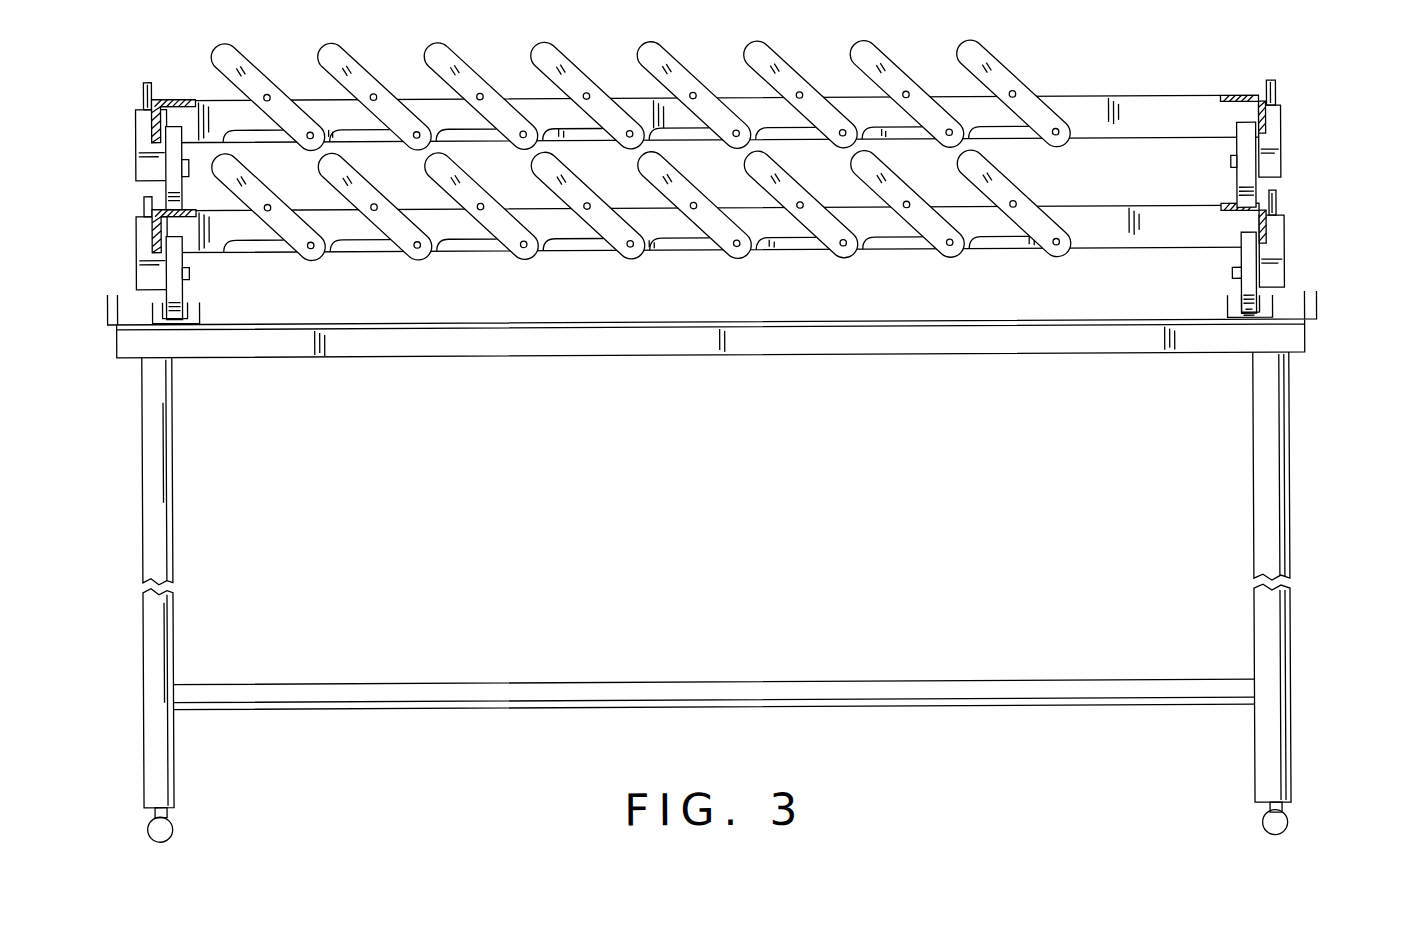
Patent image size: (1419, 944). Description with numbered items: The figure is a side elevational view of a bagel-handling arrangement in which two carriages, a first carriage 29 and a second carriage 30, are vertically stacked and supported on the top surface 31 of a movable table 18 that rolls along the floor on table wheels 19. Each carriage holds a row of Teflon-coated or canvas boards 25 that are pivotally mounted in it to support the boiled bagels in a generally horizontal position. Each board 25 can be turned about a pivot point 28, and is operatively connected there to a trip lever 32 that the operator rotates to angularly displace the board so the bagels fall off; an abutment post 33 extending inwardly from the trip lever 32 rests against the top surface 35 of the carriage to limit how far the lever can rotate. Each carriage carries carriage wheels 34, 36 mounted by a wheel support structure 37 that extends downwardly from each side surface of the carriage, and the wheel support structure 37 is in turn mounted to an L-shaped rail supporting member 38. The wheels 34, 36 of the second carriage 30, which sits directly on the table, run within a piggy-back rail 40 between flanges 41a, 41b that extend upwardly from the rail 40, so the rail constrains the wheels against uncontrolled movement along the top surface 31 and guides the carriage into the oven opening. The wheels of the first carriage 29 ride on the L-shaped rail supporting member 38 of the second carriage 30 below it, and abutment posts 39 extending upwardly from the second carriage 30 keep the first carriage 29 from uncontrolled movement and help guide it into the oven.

The table 18 is at (1289, 505).
The table wheels 19 is at (1287, 818).
The boards 25 is at (884, 131).
The pivot point 28 is at (842, 136).
The first carriage 29 is at (1187, 124).
The second carriage 30 is at (1105, 231).
The top surface 31 is at (765, 321).
The trip lever 32 is at (996, 69).
The abutment post 33 is at (909, 92).
The carriage wheels 34 is at (177, 291).
The top surface 35 is at (840, 95).
The carriage wheels 36 is at (1248, 180).
The wheel support structure 37 is at (1283, 123).
The L-shaped rail supporting member 38 is at (1242, 96).
The abutment posts 39 is at (1278, 197).
The piggy-back rail 40 is at (1250, 321).
The flange 41a is at (1228, 302).
The flange 41b is at (1272, 303).